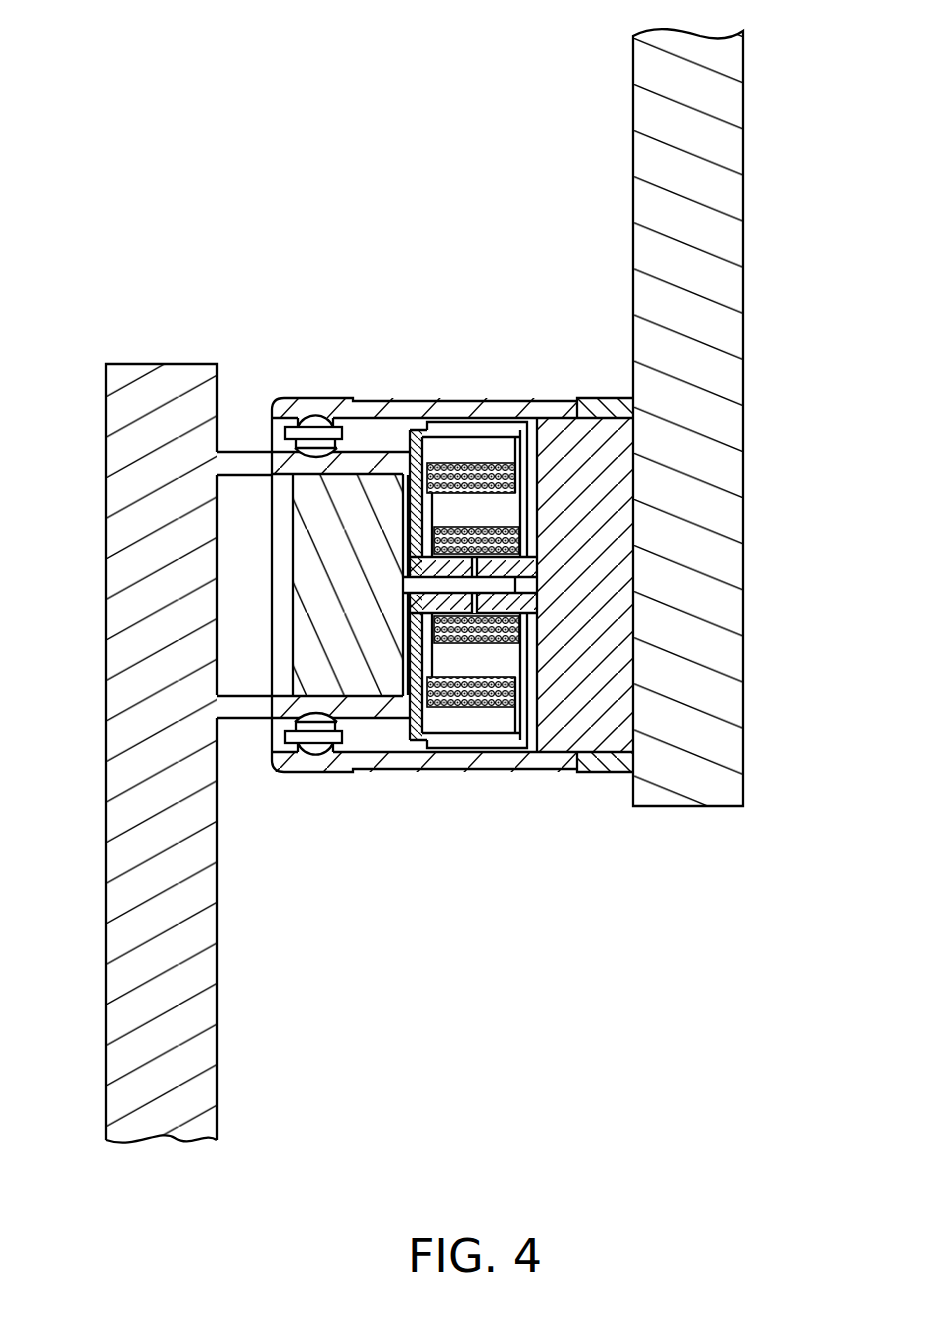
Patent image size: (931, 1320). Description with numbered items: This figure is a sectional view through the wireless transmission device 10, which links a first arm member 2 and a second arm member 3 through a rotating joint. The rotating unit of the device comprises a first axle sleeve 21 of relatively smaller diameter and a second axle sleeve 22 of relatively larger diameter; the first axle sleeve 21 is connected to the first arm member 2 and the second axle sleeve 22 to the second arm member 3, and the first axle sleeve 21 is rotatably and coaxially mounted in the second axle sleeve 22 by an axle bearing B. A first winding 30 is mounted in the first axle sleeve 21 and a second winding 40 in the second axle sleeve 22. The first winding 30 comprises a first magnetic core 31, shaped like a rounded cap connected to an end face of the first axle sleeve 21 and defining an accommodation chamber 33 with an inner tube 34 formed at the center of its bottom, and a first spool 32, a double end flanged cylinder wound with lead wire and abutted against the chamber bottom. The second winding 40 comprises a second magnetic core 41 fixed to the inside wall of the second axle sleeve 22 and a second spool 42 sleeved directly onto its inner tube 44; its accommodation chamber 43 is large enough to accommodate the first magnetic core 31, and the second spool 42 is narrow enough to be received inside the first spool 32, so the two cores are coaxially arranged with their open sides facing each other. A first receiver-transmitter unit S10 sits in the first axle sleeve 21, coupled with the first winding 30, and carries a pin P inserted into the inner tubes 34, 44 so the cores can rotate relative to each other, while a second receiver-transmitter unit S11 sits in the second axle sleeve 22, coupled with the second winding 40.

The wireless transmission device 10 is at (299, 100).
The first arm member 2 is at (118, 452).
The second arm member 3 is at (720, 372).
The first axle sleeve 21 is at (258, 462).
The second axle sleeve 22 is at (544, 408).
The first winding 30 is at (440, 413).
The first magnetic core 31 is at (428, 548).
The first spool 32 is at (477, 432).
The accommodation chamber 33 is at (466, 445).
The inner tube 34 is at (397, 497).
The second winding 40 is at (485, 749).
The second magnetic core 41 is at (492, 731).
The second spool 42 is at (495, 606).
The accommodation chamber 43 is at (498, 742).
The inner tube 44 is at (486, 600).
The axle bearing B is at (315, 742).
The pin P is at (505, 584).
The first receiver-transmitter unit S10 is at (367, 684).
The second receiver-transmitter unit S11 is at (604, 452).